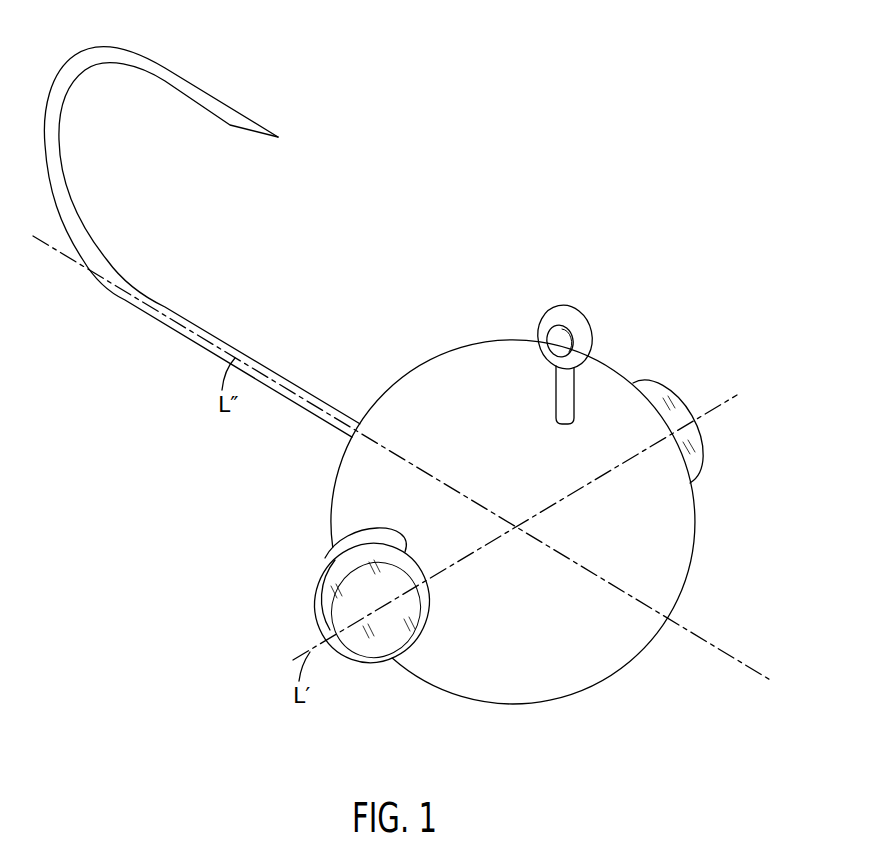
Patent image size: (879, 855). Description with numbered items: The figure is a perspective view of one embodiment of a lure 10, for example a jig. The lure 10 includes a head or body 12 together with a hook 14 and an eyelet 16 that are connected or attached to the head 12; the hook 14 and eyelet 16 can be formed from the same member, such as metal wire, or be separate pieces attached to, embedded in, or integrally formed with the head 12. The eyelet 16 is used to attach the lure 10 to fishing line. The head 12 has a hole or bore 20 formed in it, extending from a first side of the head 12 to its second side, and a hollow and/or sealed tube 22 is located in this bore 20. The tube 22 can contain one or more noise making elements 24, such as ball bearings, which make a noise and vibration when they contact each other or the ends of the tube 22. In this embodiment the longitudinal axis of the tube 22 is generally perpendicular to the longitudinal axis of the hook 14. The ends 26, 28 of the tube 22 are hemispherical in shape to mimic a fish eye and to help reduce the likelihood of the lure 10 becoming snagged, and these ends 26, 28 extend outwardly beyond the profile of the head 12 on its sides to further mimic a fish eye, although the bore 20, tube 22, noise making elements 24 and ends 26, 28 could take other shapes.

The lure 10 is at (725, 470).
The head 12 is at (637, 655).
The hook 14 is at (162, 64).
The eyelet 16 is at (568, 306).
The hole or bore 20 is at (322, 556).
The tube 22 is at (412, 615).
The noise making elements 24 is at (360, 647).
The end of tube 26 is at (677, 390).
The end of tube 28 is at (328, 617).